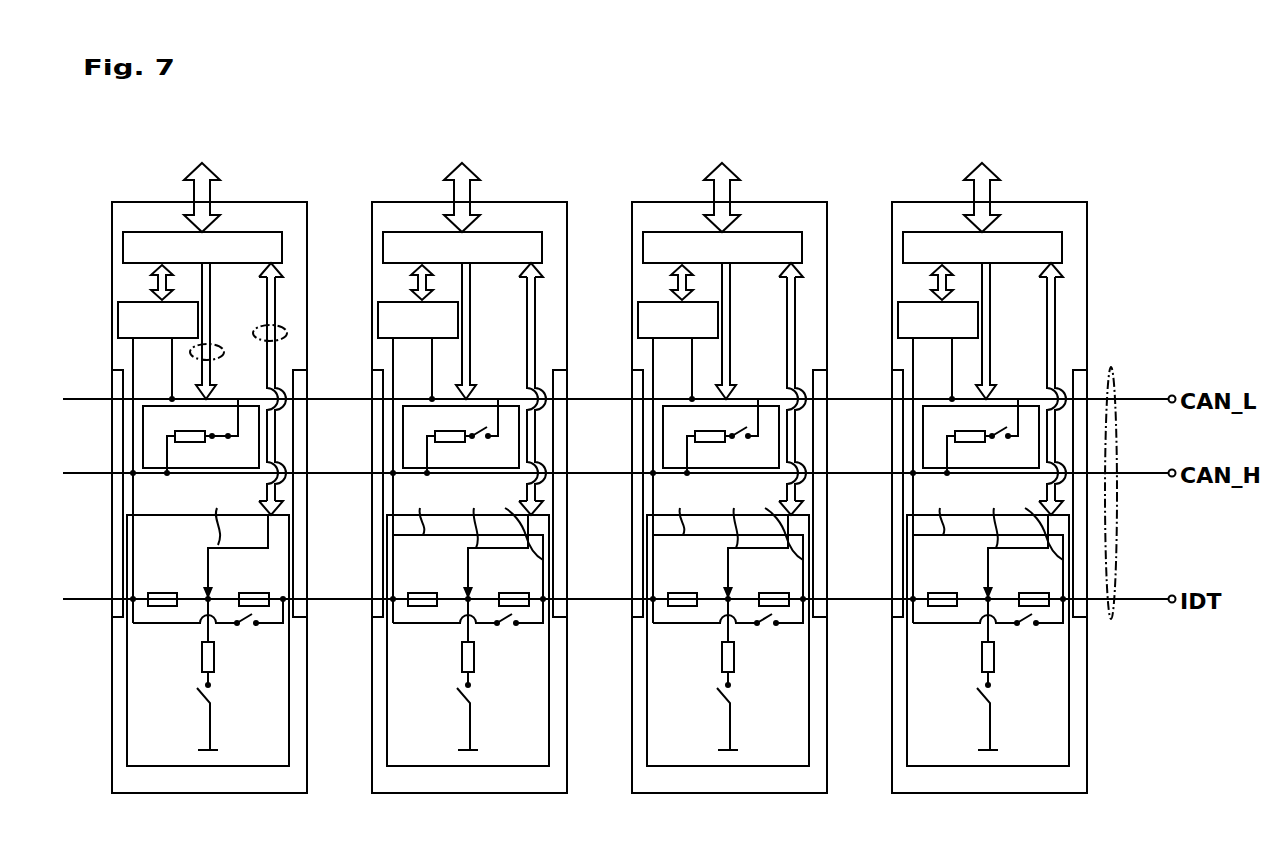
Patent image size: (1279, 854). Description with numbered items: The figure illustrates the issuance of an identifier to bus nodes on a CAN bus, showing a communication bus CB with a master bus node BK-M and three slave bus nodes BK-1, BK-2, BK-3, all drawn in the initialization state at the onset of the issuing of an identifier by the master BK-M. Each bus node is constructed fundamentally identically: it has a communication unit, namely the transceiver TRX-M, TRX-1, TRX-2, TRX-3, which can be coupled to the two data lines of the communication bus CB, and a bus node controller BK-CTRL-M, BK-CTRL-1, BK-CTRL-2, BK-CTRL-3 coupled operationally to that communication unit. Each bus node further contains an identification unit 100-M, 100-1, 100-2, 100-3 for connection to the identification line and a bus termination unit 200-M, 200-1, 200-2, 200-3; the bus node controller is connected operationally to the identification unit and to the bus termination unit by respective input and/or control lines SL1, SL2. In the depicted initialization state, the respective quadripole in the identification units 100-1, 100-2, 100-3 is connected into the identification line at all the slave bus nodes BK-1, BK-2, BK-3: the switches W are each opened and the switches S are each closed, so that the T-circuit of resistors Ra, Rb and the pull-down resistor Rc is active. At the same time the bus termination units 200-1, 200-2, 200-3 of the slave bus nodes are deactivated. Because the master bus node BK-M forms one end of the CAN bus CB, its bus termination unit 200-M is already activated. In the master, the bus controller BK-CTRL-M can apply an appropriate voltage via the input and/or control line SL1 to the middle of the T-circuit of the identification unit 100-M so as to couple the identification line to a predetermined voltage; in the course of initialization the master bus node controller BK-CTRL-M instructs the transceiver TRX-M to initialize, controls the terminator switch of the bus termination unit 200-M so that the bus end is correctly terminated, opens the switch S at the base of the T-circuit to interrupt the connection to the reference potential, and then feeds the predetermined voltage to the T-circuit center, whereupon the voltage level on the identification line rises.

The master bus node BK-M is at (143, 212).
The slave bus node BK-1 is at (469, 460).
The slave bus node BK-2 is at (729, 460).
The slave bus node BK-3 is at (989, 460).
The master bus node controller BK-CTRL-M is at (202, 247).
The bus node controller BK-CTRL-1 is at (462, 247).
The bus node controller BK-CTRL-2 is at (722, 247).
The bus node controller BK-CTRL-3 is at (982, 247).
The transceiver TRX-M is at (158, 320).
The transceiver TRX-1 is at (418, 320).
The transceiver TRX-2 is at (678, 320).
The transceiver TRX-3 is at (938, 320).
The bus termination unit 200-M is at (201, 436).
The bus termination unit 200-1 is at (461, 436).
The bus termination unit 200-2 is at (721, 436).
The bus termination unit 200-3 is at (981, 436).
The identification unit 100-M is at (209, 640).
The identification unit 100-1 is at (468, 640).
The identification unit 100-2 is at (728, 640).
The identification unit 100-3 is at (988, 640).
The input and/or control line SL1 is at (286, 328).
The input and/or control line SL2 is at (224, 352).
The communication bus CB is at (1116, 380).